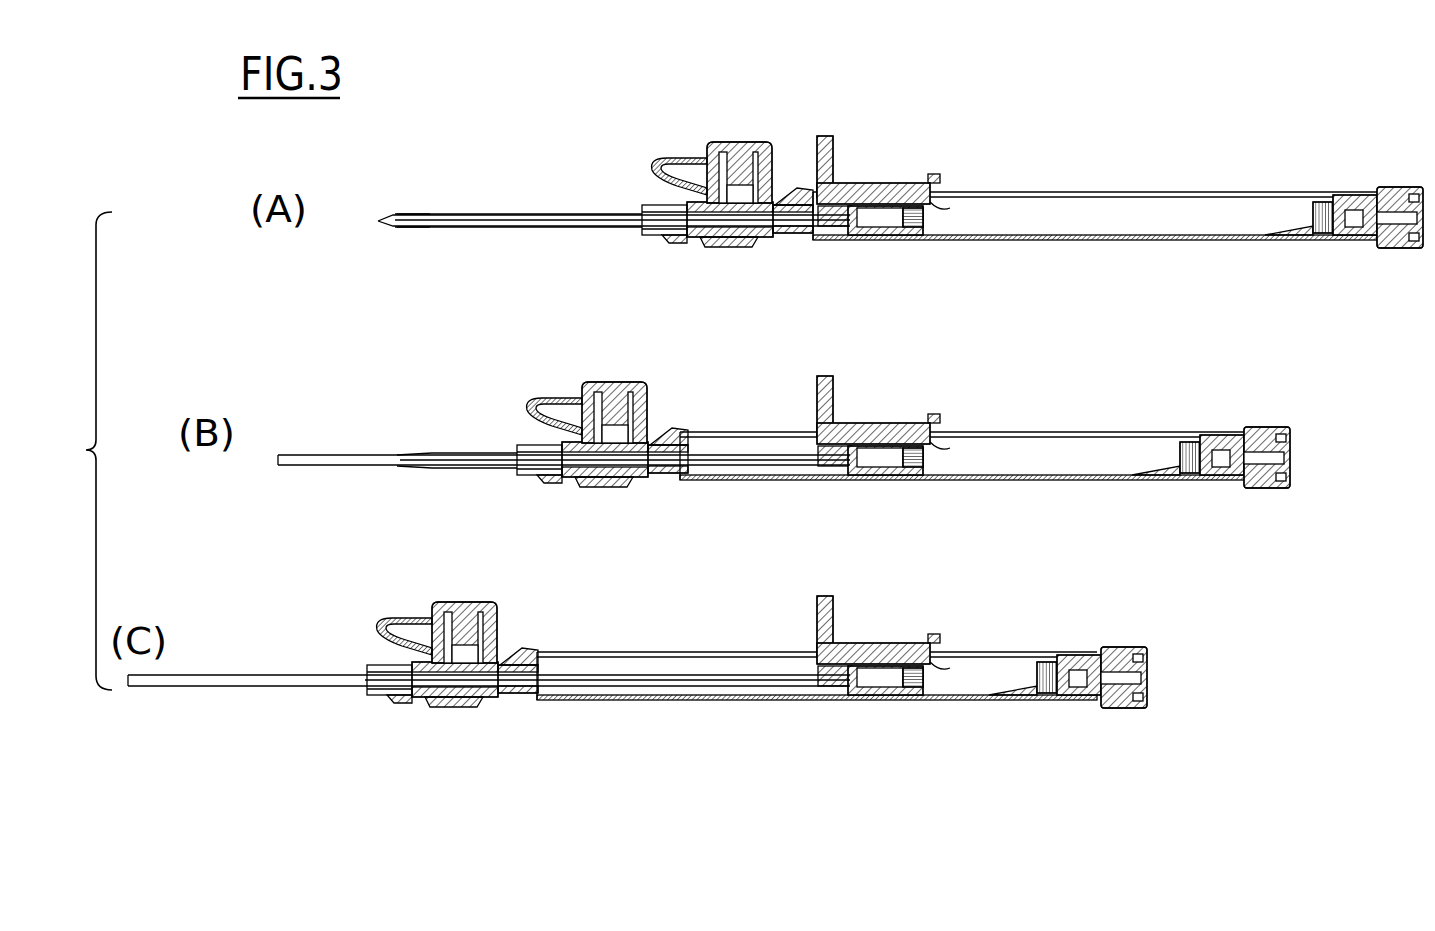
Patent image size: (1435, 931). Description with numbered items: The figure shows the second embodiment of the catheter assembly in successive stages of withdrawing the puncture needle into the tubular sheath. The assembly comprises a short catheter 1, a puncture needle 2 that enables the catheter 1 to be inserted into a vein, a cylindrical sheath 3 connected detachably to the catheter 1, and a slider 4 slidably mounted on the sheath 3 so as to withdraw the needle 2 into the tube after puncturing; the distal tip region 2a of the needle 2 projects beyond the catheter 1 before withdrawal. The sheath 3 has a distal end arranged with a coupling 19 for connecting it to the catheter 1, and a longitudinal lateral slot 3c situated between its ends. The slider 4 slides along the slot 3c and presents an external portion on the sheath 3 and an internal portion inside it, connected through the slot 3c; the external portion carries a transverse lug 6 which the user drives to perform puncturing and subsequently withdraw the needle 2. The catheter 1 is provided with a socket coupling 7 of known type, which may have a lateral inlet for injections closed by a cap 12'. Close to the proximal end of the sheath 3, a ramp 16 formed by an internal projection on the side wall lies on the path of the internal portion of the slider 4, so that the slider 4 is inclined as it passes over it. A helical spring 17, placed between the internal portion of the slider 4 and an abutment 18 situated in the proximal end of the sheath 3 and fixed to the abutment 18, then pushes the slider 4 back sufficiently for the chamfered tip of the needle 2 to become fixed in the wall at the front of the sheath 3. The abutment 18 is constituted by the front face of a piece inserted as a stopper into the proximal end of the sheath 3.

The short catheter 1 is at (494, 213).
The puncture needle 2 is at (443, 456).
The catheter tip 2a is at (392, 212).
The cylindrical sheath 3 is at (1060, 240).
The longitudinal lateral slot 3c is at (1046, 193).
The slider 4 is at (897, 183).
The transverse lug 6 is at (828, 158).
The socket coupling 7 is at (703, 151).
The cap 12' is at (602, 366).
The ramp 16 is at (1286, 228).
The helical spring 17 is at (1318, 210).
The abutment 18 is at (1348, 215).
The coupling 19 is at (1355, 236).